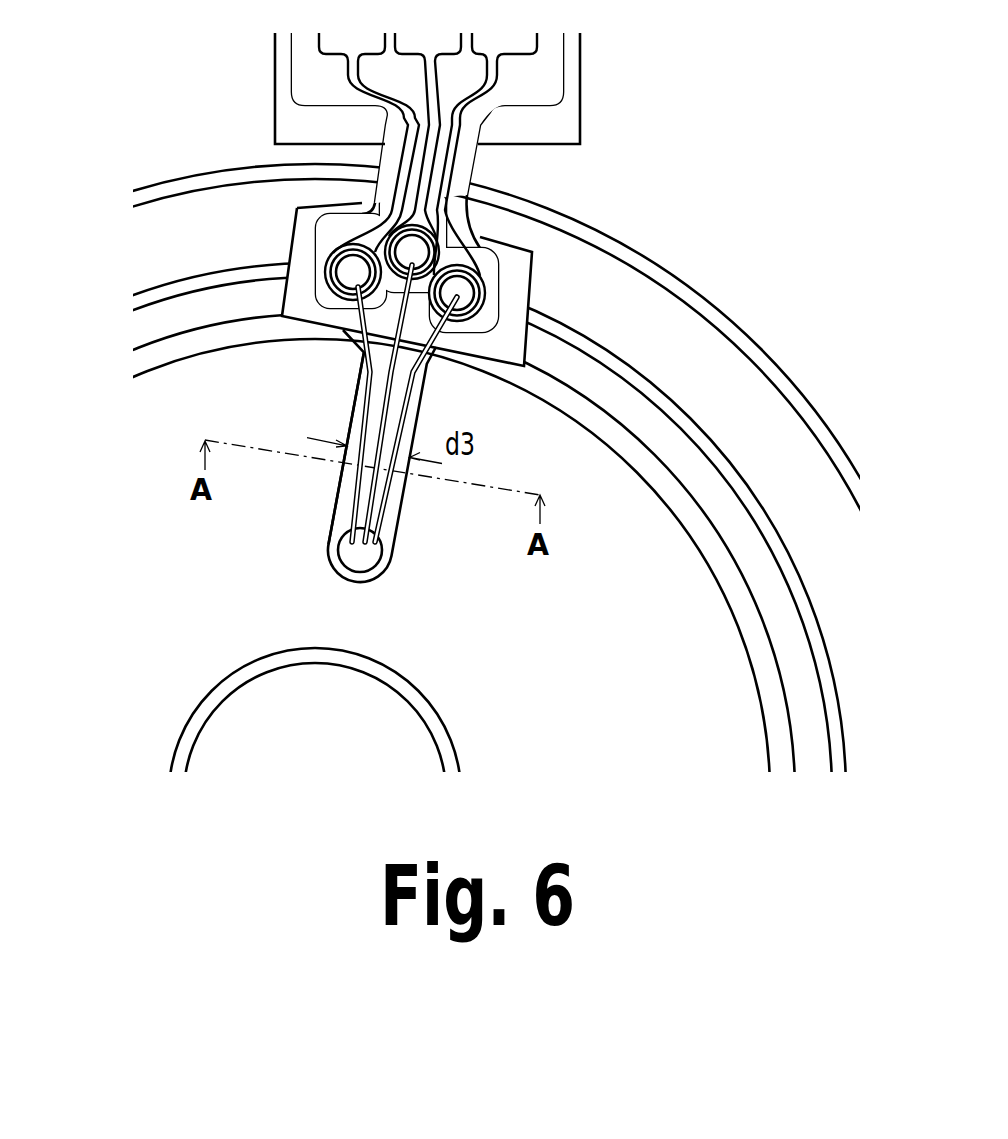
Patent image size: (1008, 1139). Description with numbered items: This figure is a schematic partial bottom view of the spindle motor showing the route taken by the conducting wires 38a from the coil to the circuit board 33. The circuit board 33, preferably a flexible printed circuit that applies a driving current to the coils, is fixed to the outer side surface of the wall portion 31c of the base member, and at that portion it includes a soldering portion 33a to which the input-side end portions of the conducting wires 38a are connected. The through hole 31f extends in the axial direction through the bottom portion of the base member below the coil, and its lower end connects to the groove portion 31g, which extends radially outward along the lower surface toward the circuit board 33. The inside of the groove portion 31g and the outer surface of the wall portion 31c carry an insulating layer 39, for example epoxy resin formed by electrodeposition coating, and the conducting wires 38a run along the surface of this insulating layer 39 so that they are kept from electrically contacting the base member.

The circuit board 33 is at (538, 83).
The soldering portion 33a is at (352, 268).
The wall portion 31c is at (302, 247).
The conducting wires 38a is at (398, 404).
The insulating layer 39 is at (345, 507).
The groove portion 31g is at (397, 506).
The through hole 31f is at (376, 563).